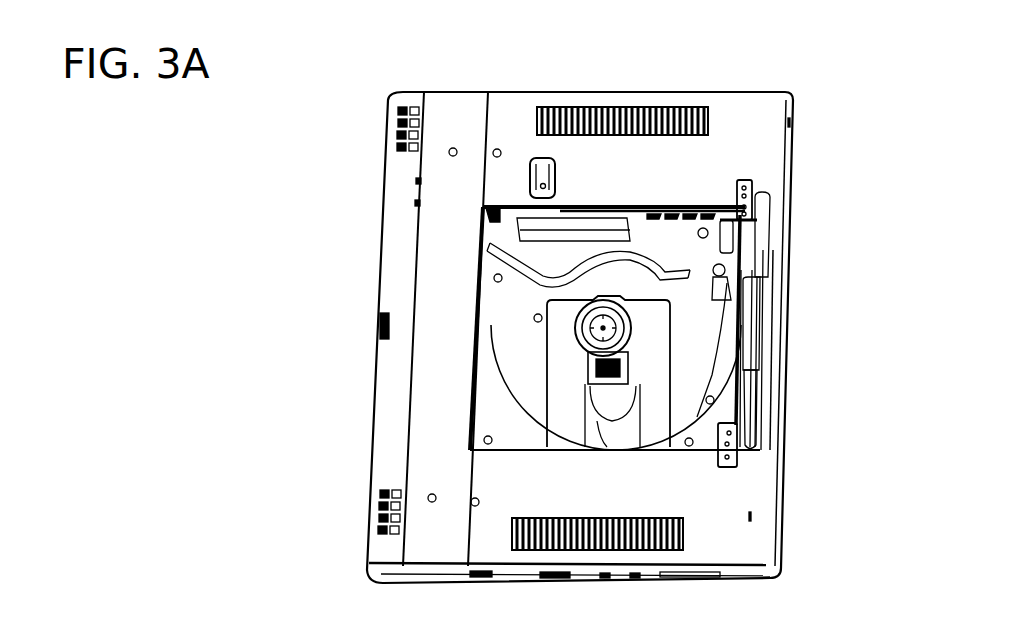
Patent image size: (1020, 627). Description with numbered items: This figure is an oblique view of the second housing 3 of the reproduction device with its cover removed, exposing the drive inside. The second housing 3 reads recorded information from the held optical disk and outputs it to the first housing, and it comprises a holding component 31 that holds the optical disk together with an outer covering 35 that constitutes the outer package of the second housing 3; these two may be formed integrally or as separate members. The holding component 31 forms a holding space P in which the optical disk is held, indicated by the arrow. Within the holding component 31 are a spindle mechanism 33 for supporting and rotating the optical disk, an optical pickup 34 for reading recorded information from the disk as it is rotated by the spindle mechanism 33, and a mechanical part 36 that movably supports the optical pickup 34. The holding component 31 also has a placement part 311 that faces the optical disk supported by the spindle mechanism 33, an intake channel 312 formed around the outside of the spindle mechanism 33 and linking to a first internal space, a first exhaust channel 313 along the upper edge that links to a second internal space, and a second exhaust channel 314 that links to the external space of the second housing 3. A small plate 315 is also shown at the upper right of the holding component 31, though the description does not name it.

The second housing 3 is at (468, 73).
The holding component 31 is at (485, 255).
The placement part 311 is at (690, 288).
The intake channel 312 is at (570, 338).
The first exhaust channel 313 is at (668, 207).
The second exhaust channel 314 is at (713, 207).
The mounting plate 315 is at (740, 217).
The spindle mechanism 33 is at (612, 328).
The optical pickup 34 is at (617, 370).
The outer covering 35 is at (525, 112).
The mechanical part 36 is at (658, 390).
The holding space P is at (503, 415).